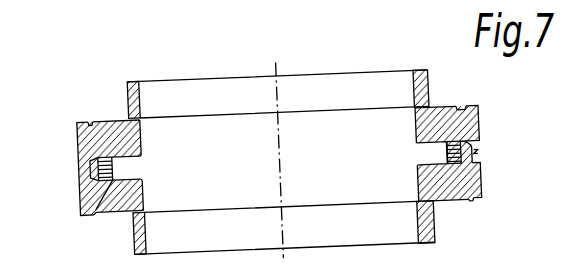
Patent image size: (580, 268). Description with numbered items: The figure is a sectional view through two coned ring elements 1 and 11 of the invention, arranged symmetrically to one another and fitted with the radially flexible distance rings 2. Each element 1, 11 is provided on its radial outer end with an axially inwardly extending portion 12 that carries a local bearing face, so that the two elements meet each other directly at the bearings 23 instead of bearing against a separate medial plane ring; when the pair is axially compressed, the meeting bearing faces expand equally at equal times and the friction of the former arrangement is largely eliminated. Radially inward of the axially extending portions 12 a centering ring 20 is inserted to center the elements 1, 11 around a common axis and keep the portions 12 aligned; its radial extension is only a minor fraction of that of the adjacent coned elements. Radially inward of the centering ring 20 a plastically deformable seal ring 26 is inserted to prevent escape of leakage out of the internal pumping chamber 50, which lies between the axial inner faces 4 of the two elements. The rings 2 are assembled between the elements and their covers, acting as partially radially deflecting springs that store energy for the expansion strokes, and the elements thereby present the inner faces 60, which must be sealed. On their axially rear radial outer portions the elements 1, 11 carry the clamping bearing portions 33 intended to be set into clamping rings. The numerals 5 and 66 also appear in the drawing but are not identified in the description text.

The element 1 is at (76, 133).
The distance ring portion 2 is at (145, 92).
The axial inner face 4 is at (137, 152).
The upper cap member 5 is at (110, 115).
The element 11 is at (82, 185).
The axially inwardly extending portion 12 is at (482, 155).
The centering ring 20 is at (90, 202).
The bearing 23 is at (97, 160).
The seal ring 26 is at (109, 190).
The clamping bearing portion 33 is at (84, 114).
The internal pumping chamber 50 is at (425, 160).
The inner face 60 is at (146, 127).
The inlet 66 is at (380, 6).